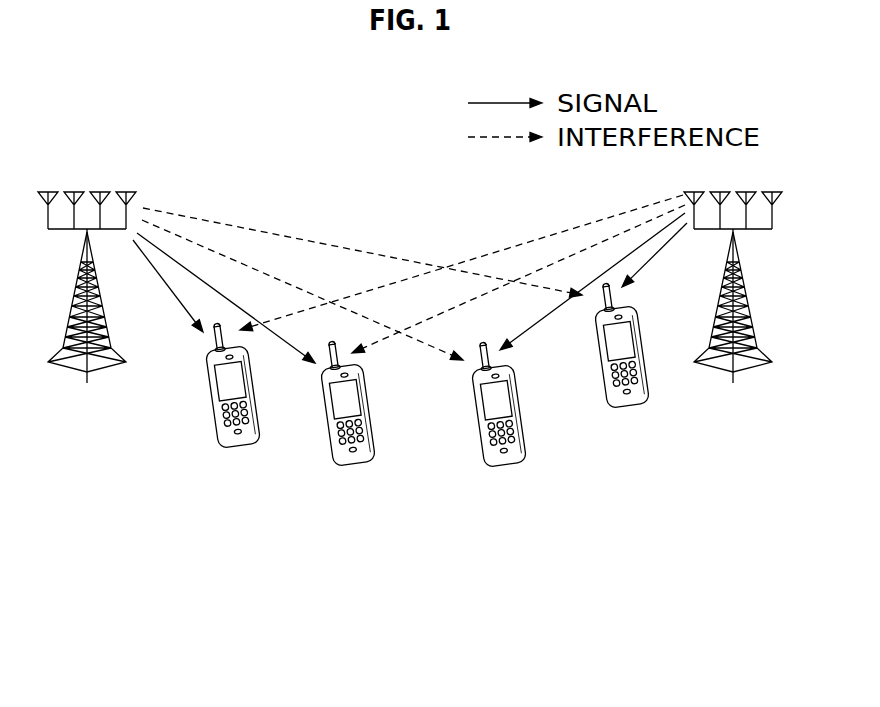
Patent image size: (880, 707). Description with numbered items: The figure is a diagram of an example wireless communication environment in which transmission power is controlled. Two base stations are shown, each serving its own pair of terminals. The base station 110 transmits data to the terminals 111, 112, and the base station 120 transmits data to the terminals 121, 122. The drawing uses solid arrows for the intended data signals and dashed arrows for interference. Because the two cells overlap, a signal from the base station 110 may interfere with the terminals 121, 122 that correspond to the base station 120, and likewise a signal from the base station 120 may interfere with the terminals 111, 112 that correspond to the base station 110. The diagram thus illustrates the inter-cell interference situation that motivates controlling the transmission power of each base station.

The base station 110 is at (87, 383).
The base station 120 is at (733, 383).
The terminal 111 is at (231, 449).
The terminal 112 is at (346, 467).
The terminal 121 is at (497, 468).
The terminal 122 is at (618, 409).